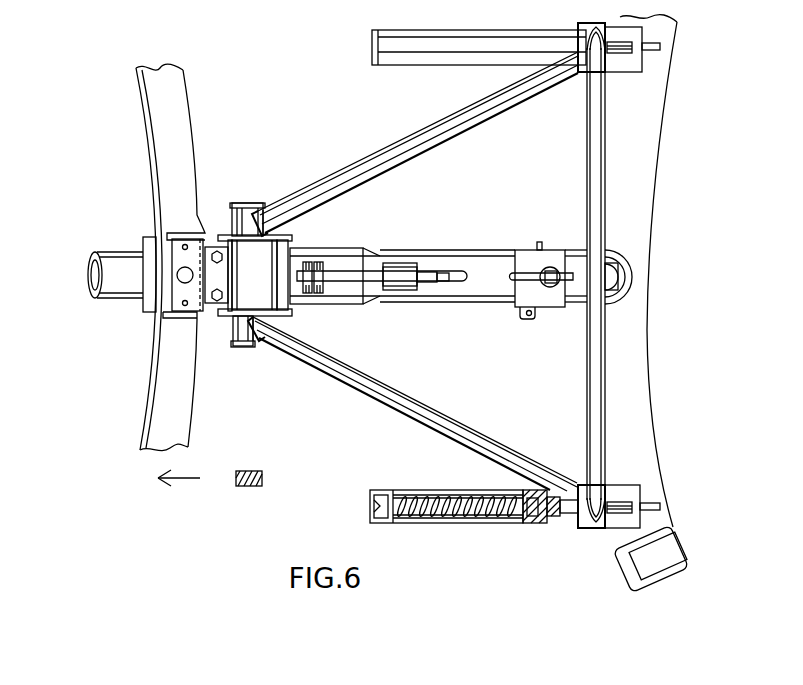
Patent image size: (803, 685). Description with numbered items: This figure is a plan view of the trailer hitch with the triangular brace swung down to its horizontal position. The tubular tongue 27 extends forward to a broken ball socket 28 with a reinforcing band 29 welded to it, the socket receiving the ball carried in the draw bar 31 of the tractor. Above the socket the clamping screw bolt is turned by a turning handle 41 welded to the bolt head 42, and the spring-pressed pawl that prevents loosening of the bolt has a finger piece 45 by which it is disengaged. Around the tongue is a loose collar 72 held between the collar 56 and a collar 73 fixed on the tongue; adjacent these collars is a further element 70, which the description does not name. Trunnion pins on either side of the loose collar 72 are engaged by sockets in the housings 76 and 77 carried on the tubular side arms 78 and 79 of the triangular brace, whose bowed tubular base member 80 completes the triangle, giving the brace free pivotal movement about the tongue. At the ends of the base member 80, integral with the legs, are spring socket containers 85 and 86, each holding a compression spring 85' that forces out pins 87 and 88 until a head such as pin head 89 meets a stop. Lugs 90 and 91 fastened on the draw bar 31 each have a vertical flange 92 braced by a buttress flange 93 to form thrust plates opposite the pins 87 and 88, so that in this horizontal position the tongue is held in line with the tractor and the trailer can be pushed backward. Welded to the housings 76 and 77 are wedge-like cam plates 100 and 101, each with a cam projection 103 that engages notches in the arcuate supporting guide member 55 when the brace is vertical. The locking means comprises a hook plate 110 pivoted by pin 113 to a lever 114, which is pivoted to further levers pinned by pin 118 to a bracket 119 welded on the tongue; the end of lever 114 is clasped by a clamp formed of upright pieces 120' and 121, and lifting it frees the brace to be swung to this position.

The tubular tongue 27 is at (125, 300).
The ball socket 28 is at (618, 258).
The reinforcing band 29 is at (635, 270).
The draw bar 31 is at (643, 387).
The turning handle 41 is at (525, 273).
The bolt head 42 is at (550, 268).
The finger piece 45 is at (540, 242).
The arcuate supporting guide member 55 is at (173, 433).
The collar 56 is at (212, 317).
The bracket plate 70 is at (182, 278).
The loose collar 72 is at (247, 273).
The collar 73 is at (282, 252).
The housing 76 is at (243, 347).
The housing 77 is at (253, 207).
The tubular side arm 78 is at (377, 381).
The tubular side arm 79 is at (377, 173).
The tubular base member 80 is at (587, 385).
The spring socket container 85 is at (446, 530).
The compression spring 85' is at (457, 549).
The spring socket container 86 is at (423, 57).
The pin 87 is at (623, 510).
The pin 88 is at (617, 54).
The pin head 89 is at (530, 522).
The lug 90 is at (622, 488).
The lug 91 is at (627, 67).
The vertical flange 92 is at (638, 495).
The buttress flange 93 is at (661, 507).
The cam plate 100 is at (238, 203).
The cam plate 101 is at (242, 347).
The cam projection 103 is at (330, 202).
The hook plate 110 is at (358, 310).
The pin 113 is at (320, 297).
The lever 114 is at (443, 279).
The pin 118 is at (392, 262).
The bracket 119 is at (403, 265).
The upright piece 120' is at (424, 308).
The upright piece 121 is at (432, 290).